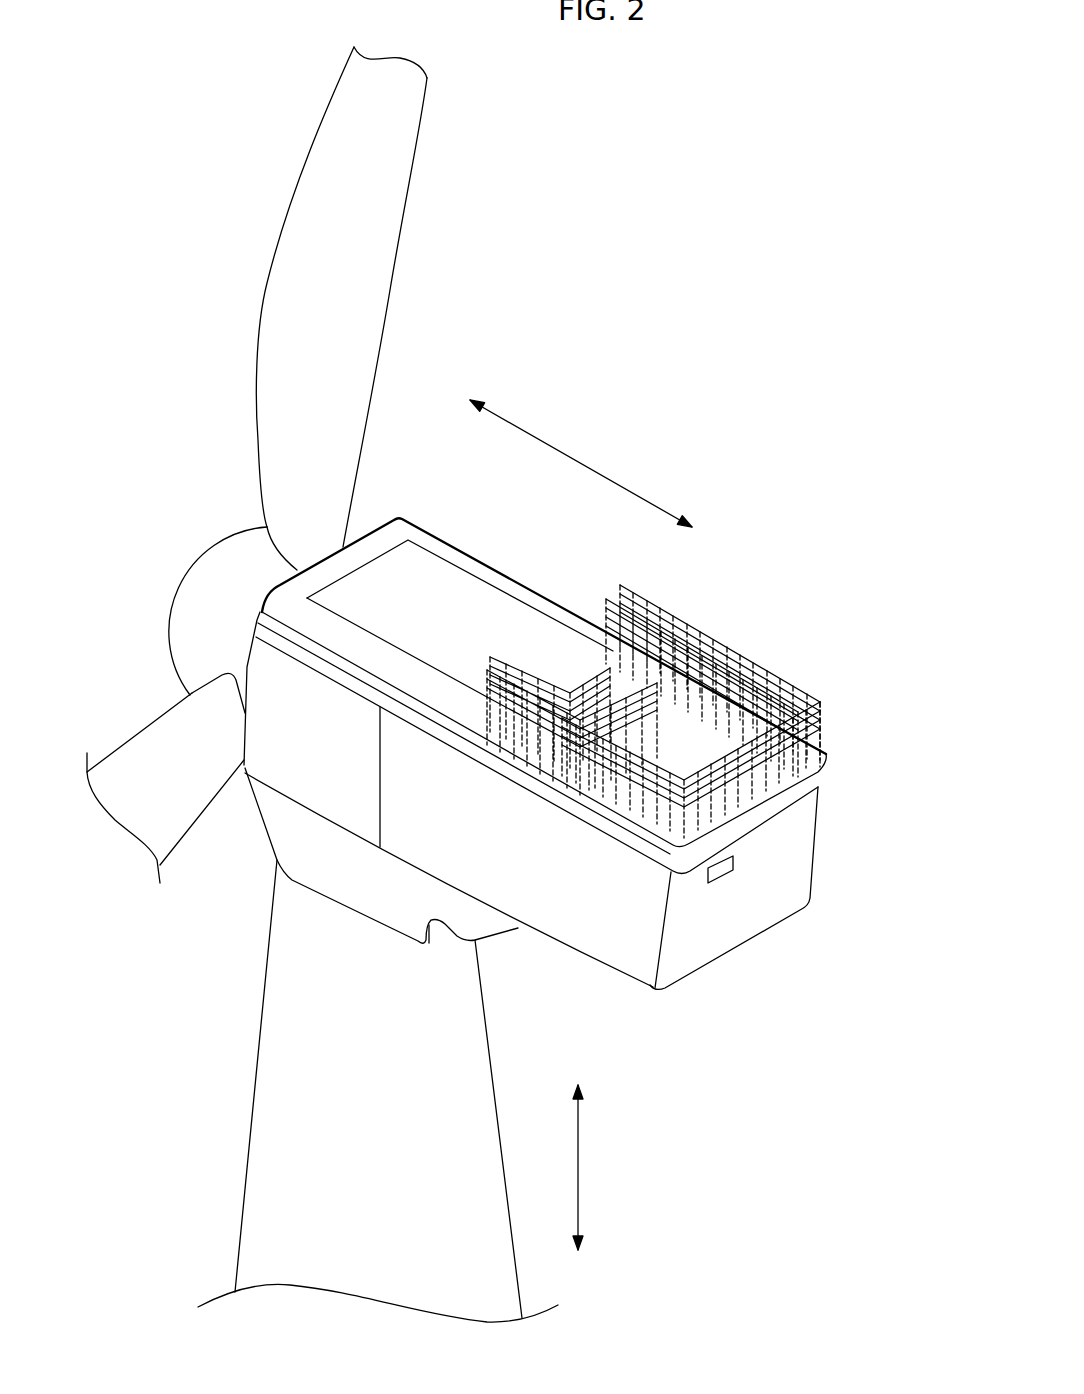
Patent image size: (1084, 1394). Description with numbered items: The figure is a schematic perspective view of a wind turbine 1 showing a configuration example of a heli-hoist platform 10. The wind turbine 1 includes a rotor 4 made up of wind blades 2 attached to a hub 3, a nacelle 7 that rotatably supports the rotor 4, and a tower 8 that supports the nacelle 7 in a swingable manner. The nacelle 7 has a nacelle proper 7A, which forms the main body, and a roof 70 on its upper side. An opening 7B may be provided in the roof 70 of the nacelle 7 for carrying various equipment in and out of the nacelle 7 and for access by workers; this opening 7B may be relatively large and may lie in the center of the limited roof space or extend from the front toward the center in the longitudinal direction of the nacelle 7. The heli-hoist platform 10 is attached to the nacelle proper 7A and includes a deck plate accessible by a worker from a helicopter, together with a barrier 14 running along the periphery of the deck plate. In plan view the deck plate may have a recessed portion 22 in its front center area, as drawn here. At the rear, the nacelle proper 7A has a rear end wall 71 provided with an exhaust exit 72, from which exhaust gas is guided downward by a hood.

The wind turbine 1 is at (621, 119).
The wind blade 2 is at (273, 293).
The hub 3 is at (173, 613).
The rotor 4 is at (208, 515).
The nacelle 7 is at (866, 528).
The nacelle proper 7A is at (595, 925).
The opening 7B is at (448, 590).
The tower 8 is at (262, 1103).
The heli-hoist platform 10 is at (805, 662).
The barrier 14 is at (717, 642).
The recessed portion 22 is at (583, 670).
The roof 70 is at (392, 532).
The rear end wall 71 is at (687, 950).
The exhaust exit 72 is at (722, 873).